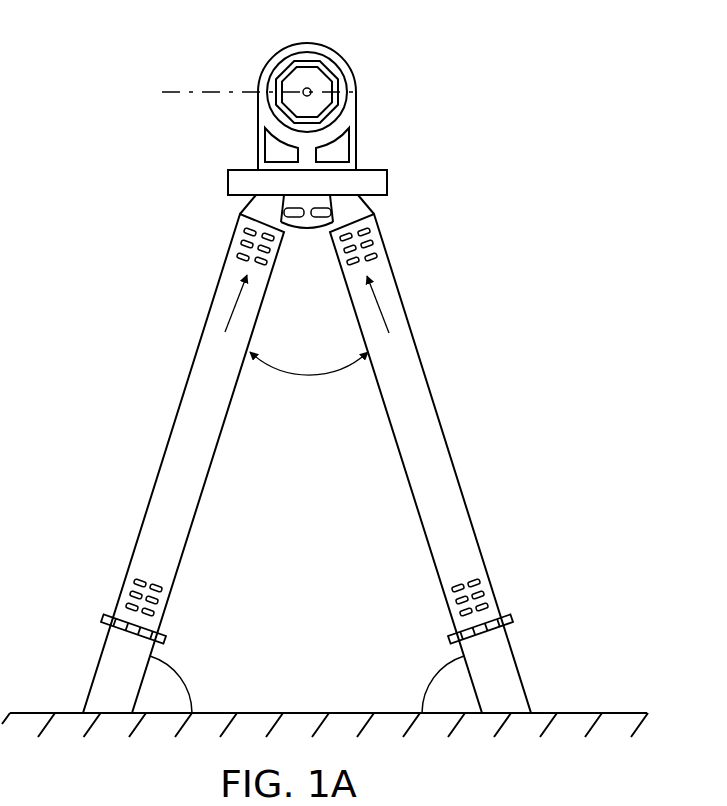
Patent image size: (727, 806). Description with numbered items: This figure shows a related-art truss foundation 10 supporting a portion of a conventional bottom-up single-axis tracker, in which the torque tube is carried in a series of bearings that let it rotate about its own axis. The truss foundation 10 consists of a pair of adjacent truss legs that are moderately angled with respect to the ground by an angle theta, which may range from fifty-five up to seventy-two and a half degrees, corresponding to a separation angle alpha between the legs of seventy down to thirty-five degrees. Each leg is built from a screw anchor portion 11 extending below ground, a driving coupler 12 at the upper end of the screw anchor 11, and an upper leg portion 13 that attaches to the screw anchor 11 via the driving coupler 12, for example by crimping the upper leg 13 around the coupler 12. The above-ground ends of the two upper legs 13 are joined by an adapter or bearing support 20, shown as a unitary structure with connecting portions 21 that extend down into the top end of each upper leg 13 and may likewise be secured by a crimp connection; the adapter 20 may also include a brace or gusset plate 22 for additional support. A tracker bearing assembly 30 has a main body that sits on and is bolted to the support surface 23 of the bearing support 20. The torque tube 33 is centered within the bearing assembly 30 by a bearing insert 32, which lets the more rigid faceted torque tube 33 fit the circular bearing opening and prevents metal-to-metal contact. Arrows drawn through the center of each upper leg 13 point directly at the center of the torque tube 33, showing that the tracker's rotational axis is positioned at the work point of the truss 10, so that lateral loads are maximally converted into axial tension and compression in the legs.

The truss foundation 10 is at (516, 250).
The screw anchor portion 11 is at (100, 655).
The driving coupler 12 is at (166, 637).
The upper leg portion 13 is at (168, 438).
The adapter 20 is at (406, 166).
The connecting portions 21 is at (255, 205).
The gusset plate 22 is at (305, 236).
The support surface 23 is at (247, 170).
The tracker bearing assembly 30 is at (377, 49).
The bearing insert 32 is at (345, 88).
The torque tube 33 is at (307, 61).